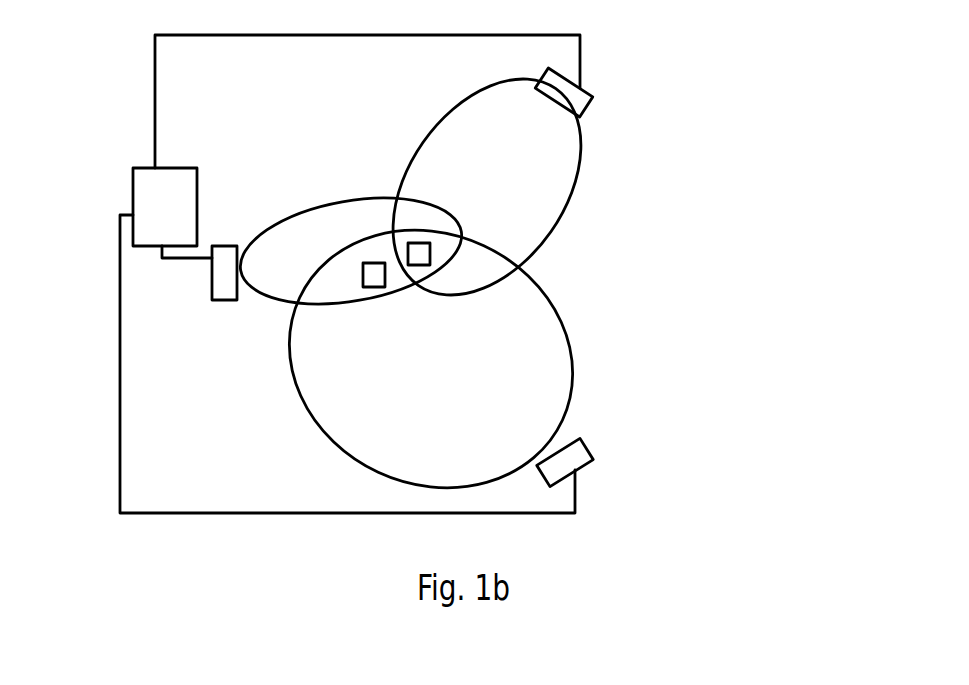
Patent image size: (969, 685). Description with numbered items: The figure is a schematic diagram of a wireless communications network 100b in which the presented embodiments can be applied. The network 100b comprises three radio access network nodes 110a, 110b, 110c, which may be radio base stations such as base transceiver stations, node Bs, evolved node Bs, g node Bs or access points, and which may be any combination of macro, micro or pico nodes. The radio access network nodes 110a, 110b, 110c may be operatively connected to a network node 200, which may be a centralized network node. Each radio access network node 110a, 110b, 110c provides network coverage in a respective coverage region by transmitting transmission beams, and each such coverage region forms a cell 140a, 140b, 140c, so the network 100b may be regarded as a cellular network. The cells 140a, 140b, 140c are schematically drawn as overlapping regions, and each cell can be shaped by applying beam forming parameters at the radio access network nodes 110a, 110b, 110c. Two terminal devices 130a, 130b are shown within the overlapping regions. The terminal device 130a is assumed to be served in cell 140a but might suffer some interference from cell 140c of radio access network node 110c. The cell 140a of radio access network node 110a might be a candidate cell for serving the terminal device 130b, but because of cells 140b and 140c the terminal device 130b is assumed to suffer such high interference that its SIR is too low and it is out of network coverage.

The wireless communications network 100b is at (724, 163).
The network node 200 is at (133, 203).
The radio access network node 110a is at (211, 272).
The radio access network node 110b is at (593, 92).
The radio access network node 110c is at (593, 457).
The terminal device 130a is at (370, 263).
The terminal device 130b is at (419, 265).
The cell 140a is at (273, 222).
The cell 140b is at (541, 233).
The cell 140c is at (403, 473).